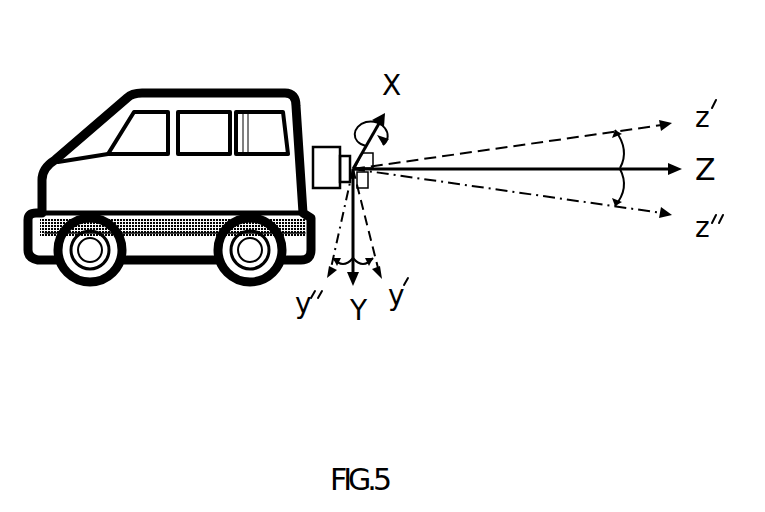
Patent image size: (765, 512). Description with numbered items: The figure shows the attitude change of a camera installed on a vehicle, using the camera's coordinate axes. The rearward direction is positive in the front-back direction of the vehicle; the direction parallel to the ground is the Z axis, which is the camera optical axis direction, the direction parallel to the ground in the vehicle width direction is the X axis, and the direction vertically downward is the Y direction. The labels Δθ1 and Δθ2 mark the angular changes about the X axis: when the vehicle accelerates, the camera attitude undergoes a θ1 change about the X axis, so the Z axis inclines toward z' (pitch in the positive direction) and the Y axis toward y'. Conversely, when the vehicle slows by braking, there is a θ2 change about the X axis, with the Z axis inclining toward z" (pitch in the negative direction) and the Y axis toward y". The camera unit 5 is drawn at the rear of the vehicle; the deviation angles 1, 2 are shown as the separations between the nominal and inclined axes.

The rotation angle deviation Δθ 1 is at (618, 130).
The rotation angle deviation Δθ 2 is at (622, 200).
The camera unit 5 is at (331, 167).